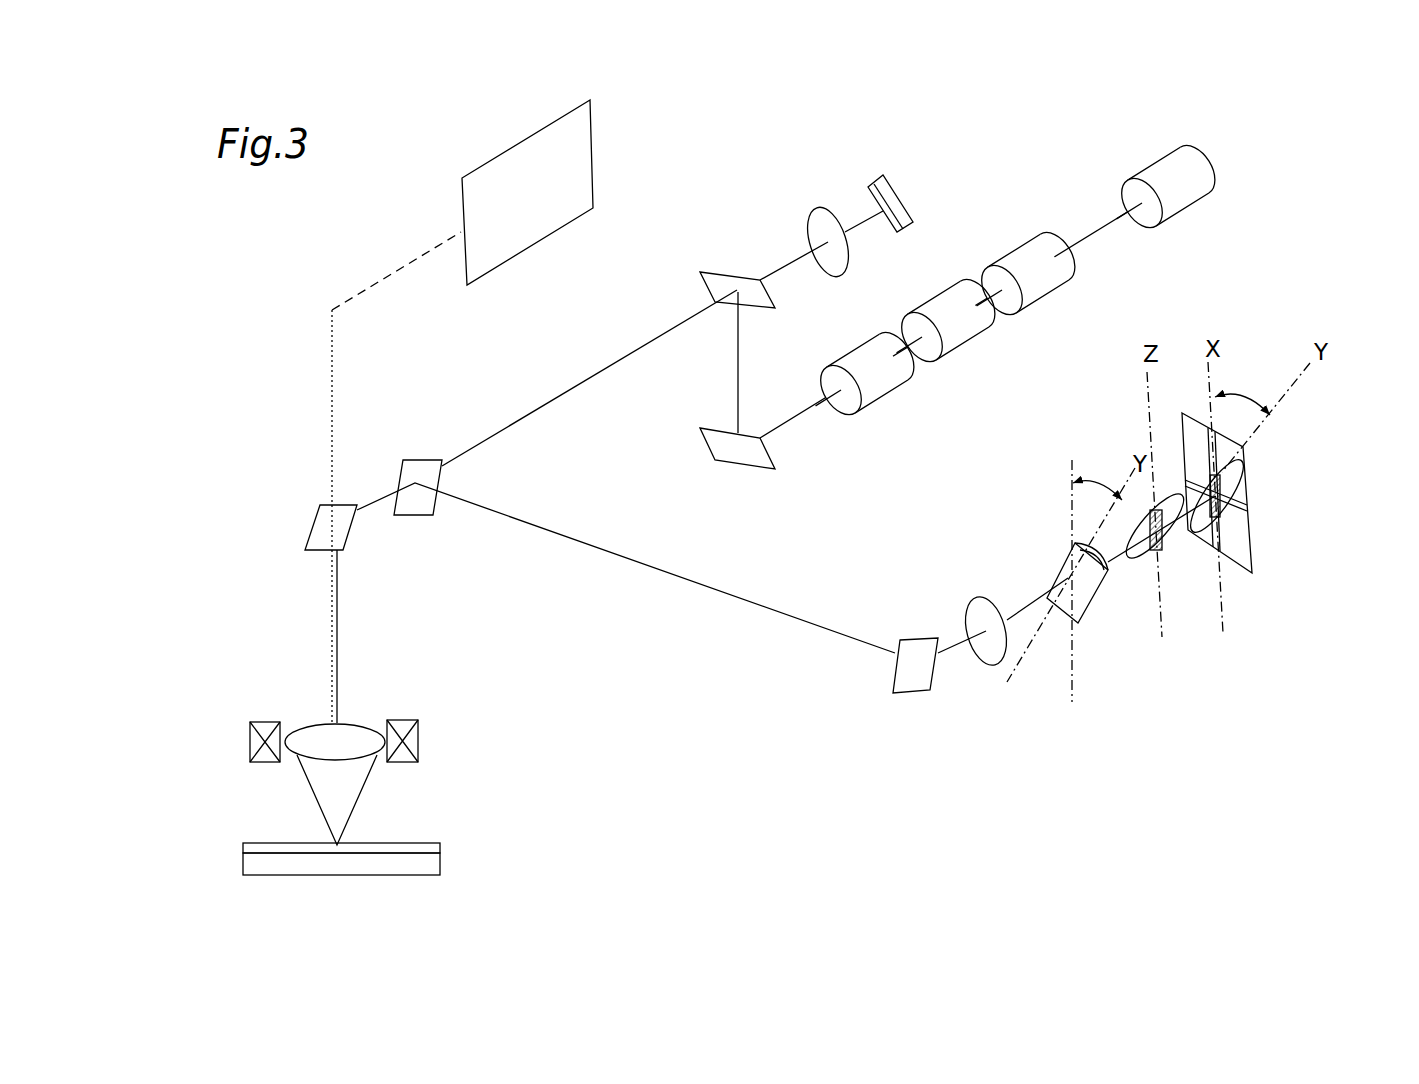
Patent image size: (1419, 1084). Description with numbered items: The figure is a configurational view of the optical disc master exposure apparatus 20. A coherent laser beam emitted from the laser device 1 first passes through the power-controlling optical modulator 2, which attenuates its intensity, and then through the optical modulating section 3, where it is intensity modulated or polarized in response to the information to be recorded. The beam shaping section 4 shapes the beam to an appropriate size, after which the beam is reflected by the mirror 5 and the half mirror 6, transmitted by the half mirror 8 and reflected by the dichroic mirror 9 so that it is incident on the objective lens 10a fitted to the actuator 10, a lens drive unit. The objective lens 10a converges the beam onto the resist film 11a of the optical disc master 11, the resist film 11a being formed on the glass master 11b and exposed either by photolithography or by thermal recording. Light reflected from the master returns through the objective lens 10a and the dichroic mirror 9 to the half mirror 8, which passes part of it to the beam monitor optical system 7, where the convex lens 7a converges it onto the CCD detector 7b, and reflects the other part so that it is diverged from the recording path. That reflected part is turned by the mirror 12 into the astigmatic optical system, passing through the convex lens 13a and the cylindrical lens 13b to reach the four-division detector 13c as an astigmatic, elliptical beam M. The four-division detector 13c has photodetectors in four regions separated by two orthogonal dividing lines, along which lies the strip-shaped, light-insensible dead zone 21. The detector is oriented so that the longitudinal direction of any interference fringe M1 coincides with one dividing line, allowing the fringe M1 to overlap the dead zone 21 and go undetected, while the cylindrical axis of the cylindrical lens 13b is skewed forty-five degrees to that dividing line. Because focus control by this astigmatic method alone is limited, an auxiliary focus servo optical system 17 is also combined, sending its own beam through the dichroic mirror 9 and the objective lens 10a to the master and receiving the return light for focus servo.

The laser device 1 is at (1213, 177).
The power-controlling optical modulator 2 is at (1045, 287).
The optical modulating section 3 is at (975, 327).
The beam shaping section 4 is at (900, 396).
The mirror 5 is at (763, 455).
The half mirror 6 is at (727, 273).
The beam monitor optical system 7 is at (886, 204).
The convex lens 7a is at (808, 227).
The CCD detector 7b is at (872, 178).
The half mirror 8 is at (418, 460).
The dichroic mirror 9 is at (312, 535).
The actuator 10 is at (353, 753).
The objective lens 10a is at (313, 735).
The optical disc master 11 is at (375, 854).
The resist film 11a is at (423, 847).
The glass master 11b is at (427, 867).
The mirror 12 is at (912, 693).
The convex lens 13a is at (988, 667).
The cylindrical lens 13b is at (1092, 607).
The 4-division detector 13c is at (1247, 533).
The auxiliary focus servo optical system 17 is at (593, 160).
The optical pickup apparatus 20 is at (1065, 170).
The dead zone 21 is at (1247, 505).
The line image M is at (1245, 470).
The interference fringe M1 is at (1222, 548).